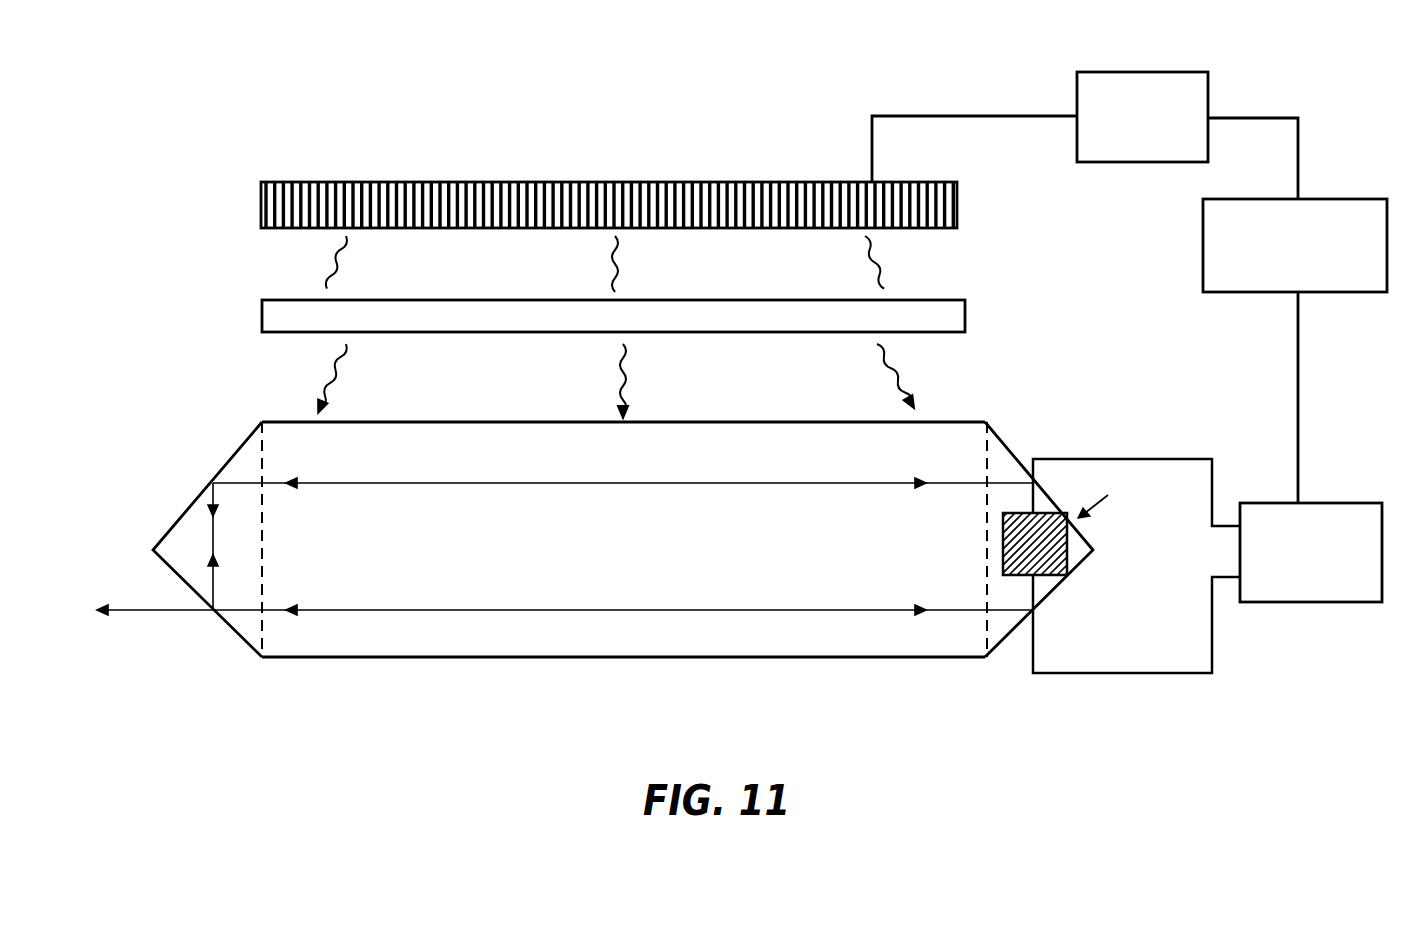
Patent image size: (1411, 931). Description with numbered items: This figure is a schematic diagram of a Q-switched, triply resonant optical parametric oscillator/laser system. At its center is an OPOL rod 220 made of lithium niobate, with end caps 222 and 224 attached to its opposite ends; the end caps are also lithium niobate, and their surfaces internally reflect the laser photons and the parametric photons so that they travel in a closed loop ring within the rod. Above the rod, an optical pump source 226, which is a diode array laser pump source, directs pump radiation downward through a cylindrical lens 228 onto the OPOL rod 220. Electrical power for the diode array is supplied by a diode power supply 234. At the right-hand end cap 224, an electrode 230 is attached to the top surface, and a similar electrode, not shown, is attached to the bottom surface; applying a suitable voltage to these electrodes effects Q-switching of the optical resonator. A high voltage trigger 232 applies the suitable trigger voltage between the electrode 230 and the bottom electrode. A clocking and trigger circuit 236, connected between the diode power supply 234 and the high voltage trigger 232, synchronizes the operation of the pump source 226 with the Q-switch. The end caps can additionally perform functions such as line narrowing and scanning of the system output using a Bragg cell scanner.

The OPOL rod 220 is at (552, 657).
The end cap 222 is at (232, 457).
The end cap 224 is at (1007, 446).
The optical pump source 226 is at (315, 182).
The cylindrical lens 228 is at (296, 300).
The electrode 230 is at (1067, 573).
The high voltage trigger 232 is at (1306, 603).
The diode power supply 234 is at (1130, 72).
The clocking and trigger circuit 236 is at (1345, 199).